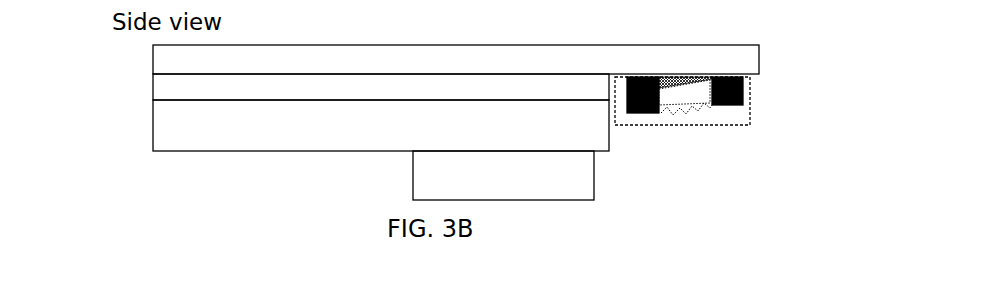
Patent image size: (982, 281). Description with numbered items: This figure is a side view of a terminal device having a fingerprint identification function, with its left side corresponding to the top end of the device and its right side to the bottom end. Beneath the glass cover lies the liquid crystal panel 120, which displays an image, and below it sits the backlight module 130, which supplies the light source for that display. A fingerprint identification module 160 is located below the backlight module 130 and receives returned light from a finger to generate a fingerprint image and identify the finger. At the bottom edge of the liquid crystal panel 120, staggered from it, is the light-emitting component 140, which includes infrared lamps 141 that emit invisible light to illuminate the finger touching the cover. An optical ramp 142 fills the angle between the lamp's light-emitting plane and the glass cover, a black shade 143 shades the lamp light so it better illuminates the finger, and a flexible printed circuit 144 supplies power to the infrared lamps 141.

The liquid crystal panel 120 is at (178, 87).
The backlight module 130 is at (381, 125).
The light-emitting component 140 is at (621, 90).
The infrared lamp 141 is at (677, 97).
The optical ramp 142 is at (683, 85).
The shade 143 is at (743, 82).
The flexible printed circuit 144 is at (685, 110).
The fingerprint identification module 160 is at (442, 178).